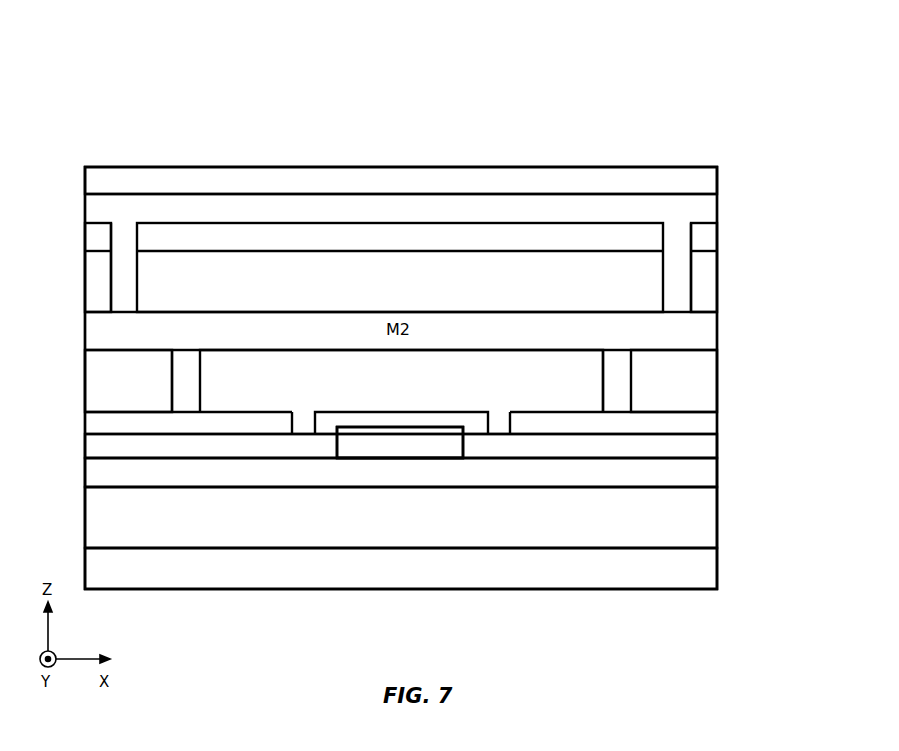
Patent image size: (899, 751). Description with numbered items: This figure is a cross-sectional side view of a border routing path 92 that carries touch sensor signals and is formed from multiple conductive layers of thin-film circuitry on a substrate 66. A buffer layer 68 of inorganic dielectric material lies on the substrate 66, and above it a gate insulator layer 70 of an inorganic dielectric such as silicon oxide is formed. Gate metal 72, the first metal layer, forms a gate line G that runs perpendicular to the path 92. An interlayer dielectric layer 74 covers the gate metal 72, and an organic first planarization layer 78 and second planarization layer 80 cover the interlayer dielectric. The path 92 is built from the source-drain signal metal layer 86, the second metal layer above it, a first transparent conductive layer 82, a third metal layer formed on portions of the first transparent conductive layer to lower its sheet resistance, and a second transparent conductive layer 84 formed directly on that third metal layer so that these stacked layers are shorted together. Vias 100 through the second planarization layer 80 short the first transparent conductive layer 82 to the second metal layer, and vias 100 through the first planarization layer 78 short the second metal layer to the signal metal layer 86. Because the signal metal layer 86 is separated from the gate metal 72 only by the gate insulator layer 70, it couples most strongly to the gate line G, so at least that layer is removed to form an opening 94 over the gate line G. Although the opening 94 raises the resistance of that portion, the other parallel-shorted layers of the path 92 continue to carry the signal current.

The substrate 66 is at (697, 570).
The buffer layer 68 is at (697, 520).
The gate insulator layer 70 is at (697, 477).
The gate metal 72 is at (445, 445).
The gate line G is at (357, 445).
The interlayer dielectric layer 74 is at (697, 448).
The planarization layer 78 is at (513, 362).
The planarization layer 80 is at (655, 280).
The first transparent conductive layer 82 is at (655, 238).
The second transparent conductive layer 84 is at (483, 182).
The metal layer 86 is at (697, 423).
The border routing path 92 is at (718, 91).
The opening 94 is at (507, 407).
The vias 100 is at (183, 386).